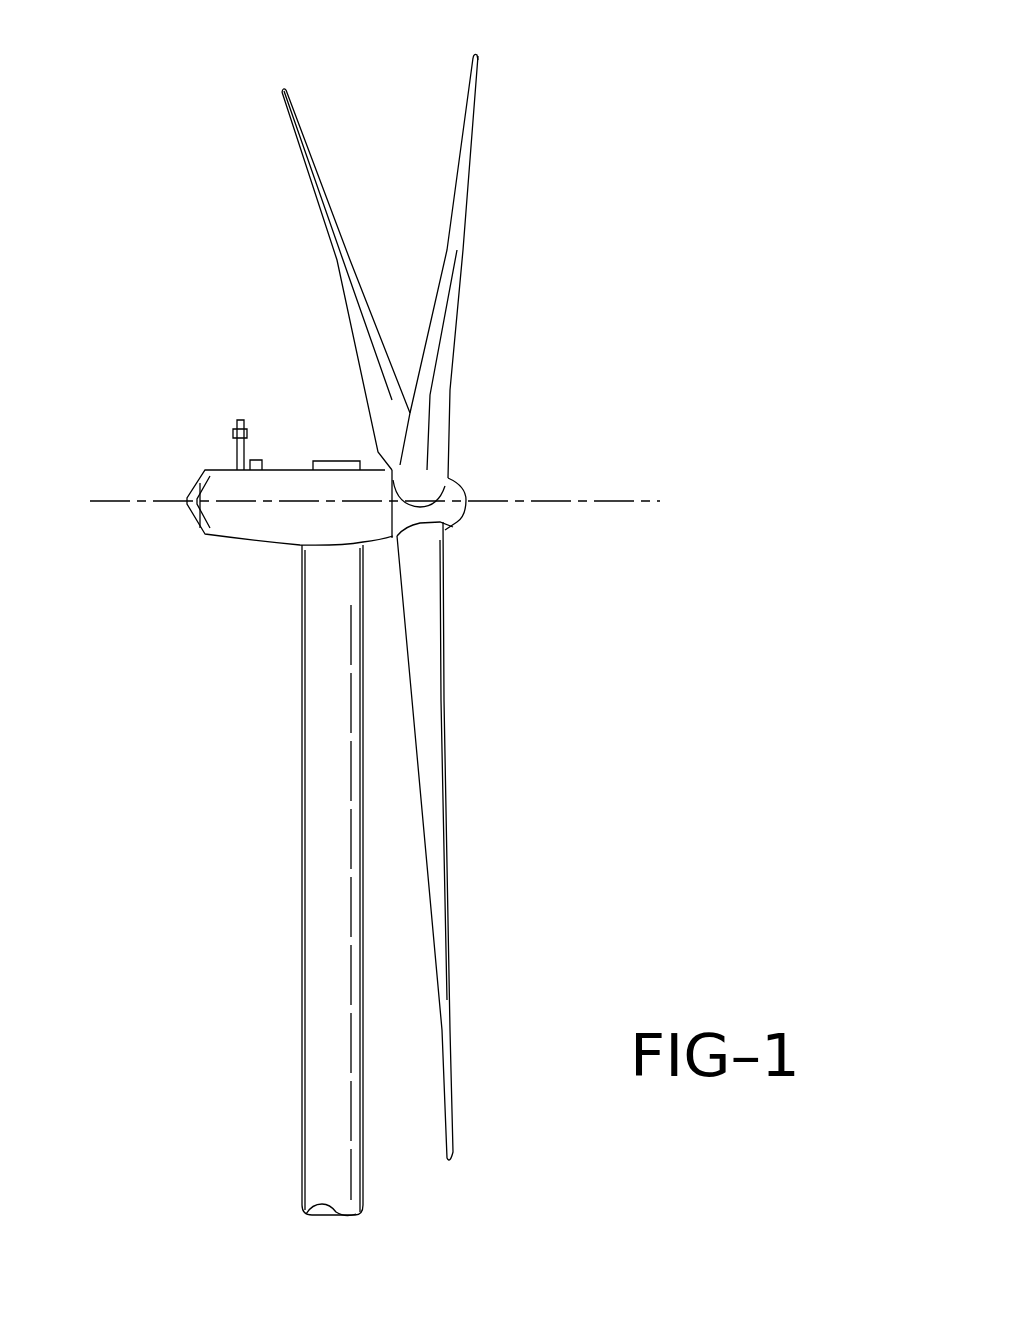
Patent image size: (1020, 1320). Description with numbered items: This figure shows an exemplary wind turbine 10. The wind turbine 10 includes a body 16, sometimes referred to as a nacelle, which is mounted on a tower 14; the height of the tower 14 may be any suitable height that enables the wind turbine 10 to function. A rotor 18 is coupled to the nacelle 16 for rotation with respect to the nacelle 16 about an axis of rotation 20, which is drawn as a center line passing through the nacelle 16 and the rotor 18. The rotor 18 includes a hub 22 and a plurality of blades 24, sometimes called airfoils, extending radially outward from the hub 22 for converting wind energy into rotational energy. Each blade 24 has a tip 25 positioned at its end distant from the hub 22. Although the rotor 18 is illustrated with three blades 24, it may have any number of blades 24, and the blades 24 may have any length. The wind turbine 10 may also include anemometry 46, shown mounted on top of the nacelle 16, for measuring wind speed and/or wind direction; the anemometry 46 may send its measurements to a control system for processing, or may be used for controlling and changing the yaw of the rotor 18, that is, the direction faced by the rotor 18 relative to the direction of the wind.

The wind turbine 10 is at (172, 327).
The tower 14 is at (302, 692).
The body 16 is at (238, 540).
The rotor 18 is at (455, 570).
The axis of rotation 20 is at (586, 500).
The hub 22 is at (462, 522).
The blades 24 is at (320, 196).
The tip 25 is at (478, 56).
The anemometry 46 is at (234, 432).